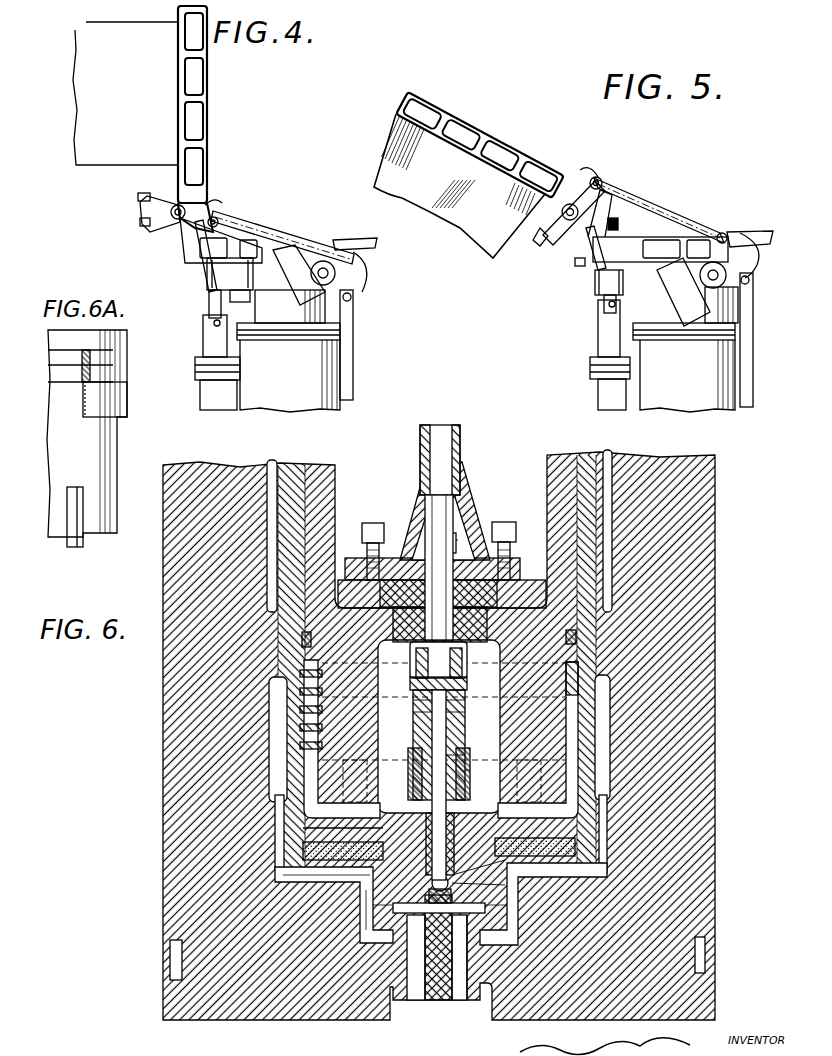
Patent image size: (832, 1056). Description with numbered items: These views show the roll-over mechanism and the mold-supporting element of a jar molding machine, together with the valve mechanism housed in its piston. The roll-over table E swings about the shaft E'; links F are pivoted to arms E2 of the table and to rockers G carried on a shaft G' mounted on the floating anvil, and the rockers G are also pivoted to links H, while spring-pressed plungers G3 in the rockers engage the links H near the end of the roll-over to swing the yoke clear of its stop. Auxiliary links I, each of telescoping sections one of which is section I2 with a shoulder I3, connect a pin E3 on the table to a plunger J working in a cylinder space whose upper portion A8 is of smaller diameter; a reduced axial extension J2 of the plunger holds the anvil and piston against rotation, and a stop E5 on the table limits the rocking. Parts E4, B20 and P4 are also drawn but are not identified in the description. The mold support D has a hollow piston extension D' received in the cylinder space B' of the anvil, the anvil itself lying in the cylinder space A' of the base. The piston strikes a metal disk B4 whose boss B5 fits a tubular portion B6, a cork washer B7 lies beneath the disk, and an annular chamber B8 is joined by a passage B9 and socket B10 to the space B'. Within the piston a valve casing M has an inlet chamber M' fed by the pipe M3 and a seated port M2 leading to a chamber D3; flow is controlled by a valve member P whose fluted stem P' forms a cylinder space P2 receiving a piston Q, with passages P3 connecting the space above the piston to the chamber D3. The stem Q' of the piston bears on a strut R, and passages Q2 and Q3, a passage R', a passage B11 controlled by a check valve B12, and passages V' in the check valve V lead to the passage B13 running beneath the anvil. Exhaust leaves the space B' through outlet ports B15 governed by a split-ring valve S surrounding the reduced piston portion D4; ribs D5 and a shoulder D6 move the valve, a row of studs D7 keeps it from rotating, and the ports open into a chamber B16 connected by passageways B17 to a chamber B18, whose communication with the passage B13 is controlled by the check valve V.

In FIG. 4, the roll-over table E is at (201, 119).
In FIG. 5, the roll-over table E is at (469, 175).
In FIG. 5, the shaft E' is at (559, 232).
In FIG. 4, the arm of the table E2 is at (219, 220).
In FIG. 5, the arm of the table E2 is at (598, 177).
In FIG. 4, the pin E3 is at (206, 206).
In FIG. 5, the pin E3 is at (590, 182).
In FIG. 4, the stop E4 is at (138, 199).
In FIG. 5, the stop E4 is at (536, 240).
In FIG. 4, the stop E5 is at (142, 223).
In FIG. 5, the stop E5 is at (577, 266).
In FIG. 4, the link F is at (262, 229).
In FIG. 5, the link F is at (647, 198).
In FIG. 4, the mold supporting element D is at (355, 232).
In FIG. 5, the mold supporting element D is at (750, 225).
In FIG. 4, the link I is at (180, 258).
In FIG. 5, the link I is at (658, 226).
In FIG. 5, the telescoping section I2 is at (610, 277).
In FIG. 4, the shoulder I3 is at (212, 308).
In FIG. 5, the shoulder I3 is at (606, 290).
In FIG. 4, the block B20 is at (207, 280).
In FIG. 5, the block B20 is at (598, 282).
In FIG. 4, the plunger J is at (205, 345).
In FIG. 5, the plunger J is at (606, 337).
In FIG. 4, the axial extension J2 is at (246, 298).
In FIG. 5, the axial extension J2 is at (617, 212).
In FIG. 4, the rocker G is at (366, 276).
In FIG. 5, the rocker G is at (765, 258).
In FIG. 5, the shaft G' is at (744, 279).
In FIG. 4, the spring-pressed plunger G3 is at (300, 300).
In FIG. 5, the spring-pressed plunger G3 is at (697, 320).
In FIG. 5, the cylinder space B' is at (745, 305).
In FIG. 6, the cylinder space B' is at (422, 736).
In FIG. 4, the link H is at (354, 350).
In FIG. 5, the link H is at (754, 337).
In FIG. 5, the cylinder space A' is at (708, 367).
In FIG. 4, the upper cylinder portion A8 is at (200, 393).
In FIG. 5, the upper cylinder portion A8 is at (598, 394).
In FIG. 6A, the piston extension D' is at (80, 357).
In FIG. 6, the piston extension D' is at (439, 522).
In FIG. 6, the chamber D3 is at (500, 724).
In FIG. 6, the reduced piston portion D4 is at (469, 779).
In FIG. 6A, the ribs D5 is at (72, 487).
In FIG. 6, the ribs D5 is at (600, 779).
In FIG. 6A, the shoulder D6 is at (84, 390).
In FIG. 6, the shoulder D6 is at (300, 640).
In FIG. 6, the studs D7 is at (300, 746).
In FIG. 6A, the annular valve member S is at (84, 412).
In FIG. 6, the annular valve member S is at (600, 662).
In FIG. 6, the valve casing M is at (420, 521).
In FIG. 6, the inlet chamber M' is at (458, 511).
In FIG. 6, the valve seated port M2 is at (400, 590).
In FIG. 6, the pipe section M3 is at (461, 446).
In FIG. 6, the valve member P is at (440, 532).
In FIG. 6, the fluted stem P' is at (433, 600).
In FIG. 6, the cylinder space P2 is at (466, 704).
In FIG. 6, the passages P3 is at (412, 666).
In FIG. 6, the port P4 is at (464, 757).
In FIG. 6, the piston Q is at (453, 668).
In FIG. 6, the piston stem Q' is at (423, 745).
In FIG. 6, the passage Q2 is at (416, 692).
In FIG. 6, the passage Q3 is at (416, 708).
In FIG. 6, the strut R is at (403, 774).
In FIG. 6, the passage R' is at (475, 779).
In FIG. 6, the metal disk B4 is at (410, 800).
In FIG. 6, the central boss B5 is at (340, 858).
In FIG. 6, the tubular portion B6 is at (365, 900).
In FIG. 6, the washer B7 is at (605, 840).
In FIG. 6, the annular chamber B8 is at (350, 882).
In FIG. 6, the passage B9 is at (508, 882).
In FIG. 6, the socket B10 is at (330, 845).
In FIG. 6, the passage B11 is at (490, 906).
In FIG. 6, the check valve B12 is at (372, 890).
In FIG. 6, the passage B13 is at (432, 1008).
In FIG. 6, the outlet ports B15 is at (600, 680).
In FIG. 6, the chamber B16 is at (605, 705).
In FIG. 6, the passageways B17 is at (600, 862).
In FIG. 6, the chamber B18 is at (478, 965).
In FIG. 6, the check valve V is at (367, 982).
In FIG. 6, the passages V' is at (409, 982).